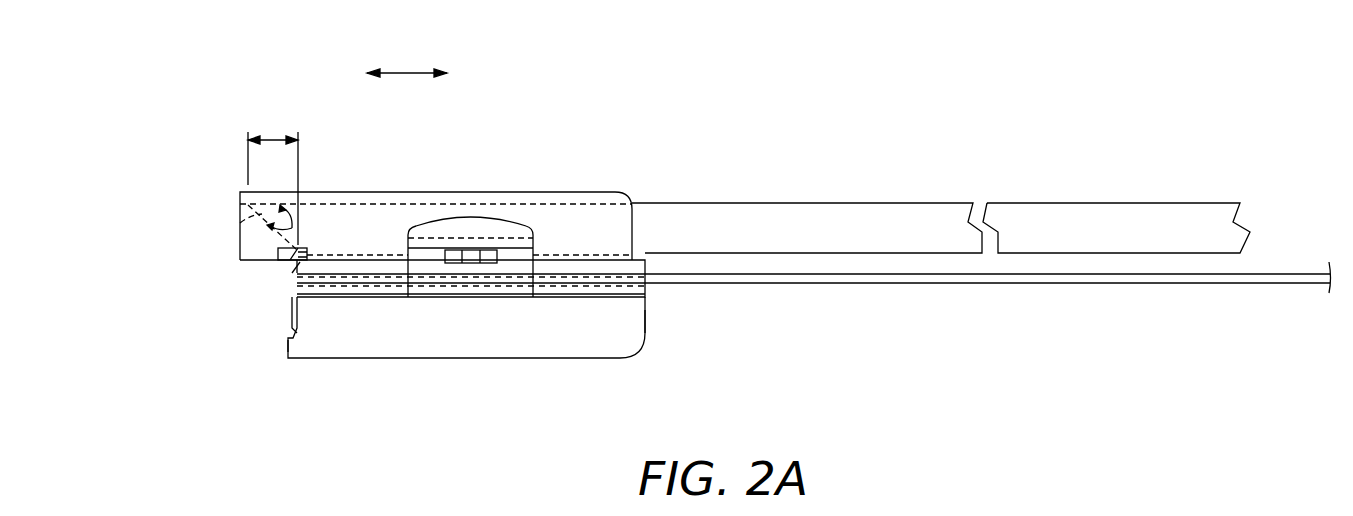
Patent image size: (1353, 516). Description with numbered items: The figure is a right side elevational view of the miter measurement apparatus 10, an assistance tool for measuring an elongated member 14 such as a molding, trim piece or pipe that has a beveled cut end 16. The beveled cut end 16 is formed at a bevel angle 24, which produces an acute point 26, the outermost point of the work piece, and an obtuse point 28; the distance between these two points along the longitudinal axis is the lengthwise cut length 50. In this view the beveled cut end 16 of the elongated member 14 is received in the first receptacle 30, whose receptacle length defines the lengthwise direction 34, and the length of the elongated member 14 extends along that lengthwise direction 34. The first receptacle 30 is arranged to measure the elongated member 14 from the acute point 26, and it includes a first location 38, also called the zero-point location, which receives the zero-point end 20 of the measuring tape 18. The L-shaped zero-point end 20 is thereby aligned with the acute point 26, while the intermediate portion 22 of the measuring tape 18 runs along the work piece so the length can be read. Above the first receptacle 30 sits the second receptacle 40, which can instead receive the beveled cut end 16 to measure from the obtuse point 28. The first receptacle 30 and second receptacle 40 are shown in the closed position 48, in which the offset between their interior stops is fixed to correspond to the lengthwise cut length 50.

The miter measurement apparatus 10 is at (686, 119).
The elongated member 14 is at (805, 203).
The beveled cut end 16 is at (240, 222).
The measuring tape 18 is at (1185, 283).
The zero-point end 20 is at (292, 273).
The intermediate portion 22 is at (618, 298).
The bevel angle 24 is at (292, 228).
The acute point 26 is at (262, 222).
The obtuse point 28 is at (287, 262).
The first receptacle 30 is at (523, 358).
The lengthwise direction 34 is at (407, 73).
The first location 38 is at (290, 330).
The second receptacle 40 is at (520, 192).
The closed position 48 is at (648, 361).
The lengthwise cut length 50 is at (273, 138).